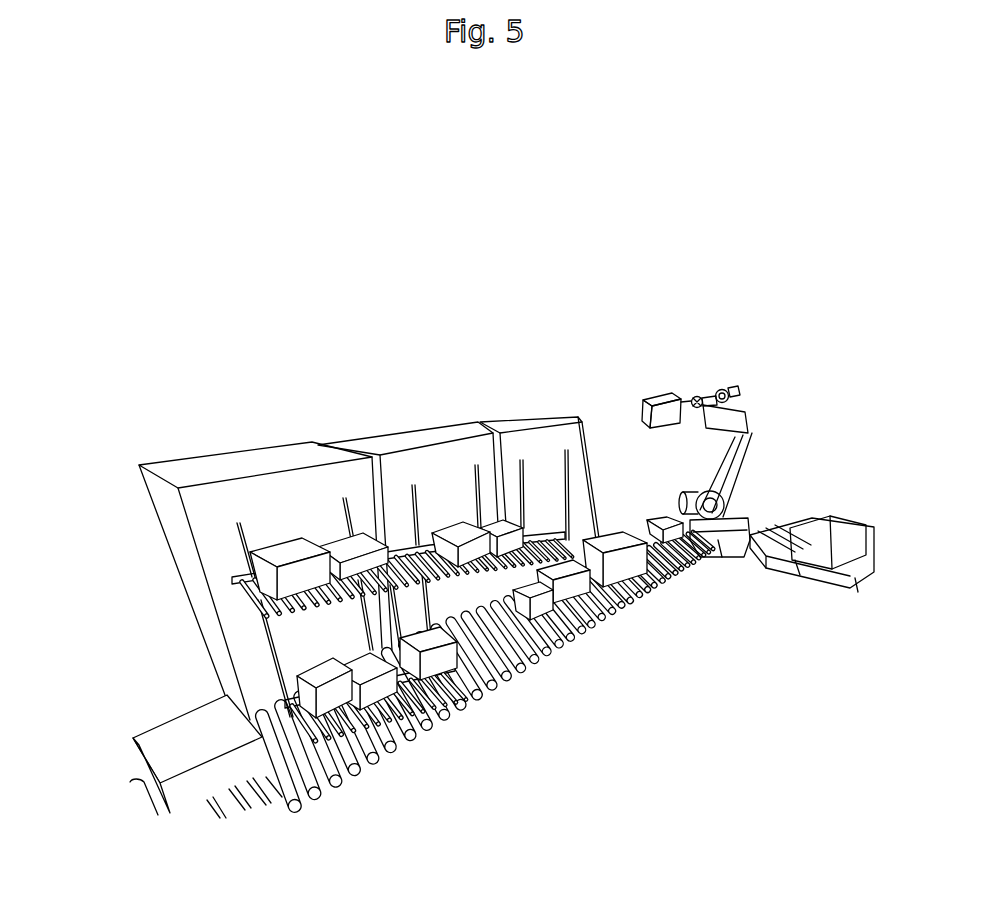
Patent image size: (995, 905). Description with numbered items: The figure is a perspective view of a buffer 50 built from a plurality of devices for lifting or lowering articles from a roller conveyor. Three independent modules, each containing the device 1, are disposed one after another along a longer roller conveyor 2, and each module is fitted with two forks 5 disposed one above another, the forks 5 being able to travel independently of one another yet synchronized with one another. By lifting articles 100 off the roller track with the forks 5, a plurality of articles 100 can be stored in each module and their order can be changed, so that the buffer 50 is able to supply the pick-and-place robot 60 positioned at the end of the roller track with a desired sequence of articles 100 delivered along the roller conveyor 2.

The device 1 is at (240, 463).
The roller conveyor 2 is at (565, 663).
The fork 5 is at (541, 528).
The buffer 50 is at (360, 372).
The pick-and-place robot 60 is at (725, 371).
The article 100 is at (289, 588).